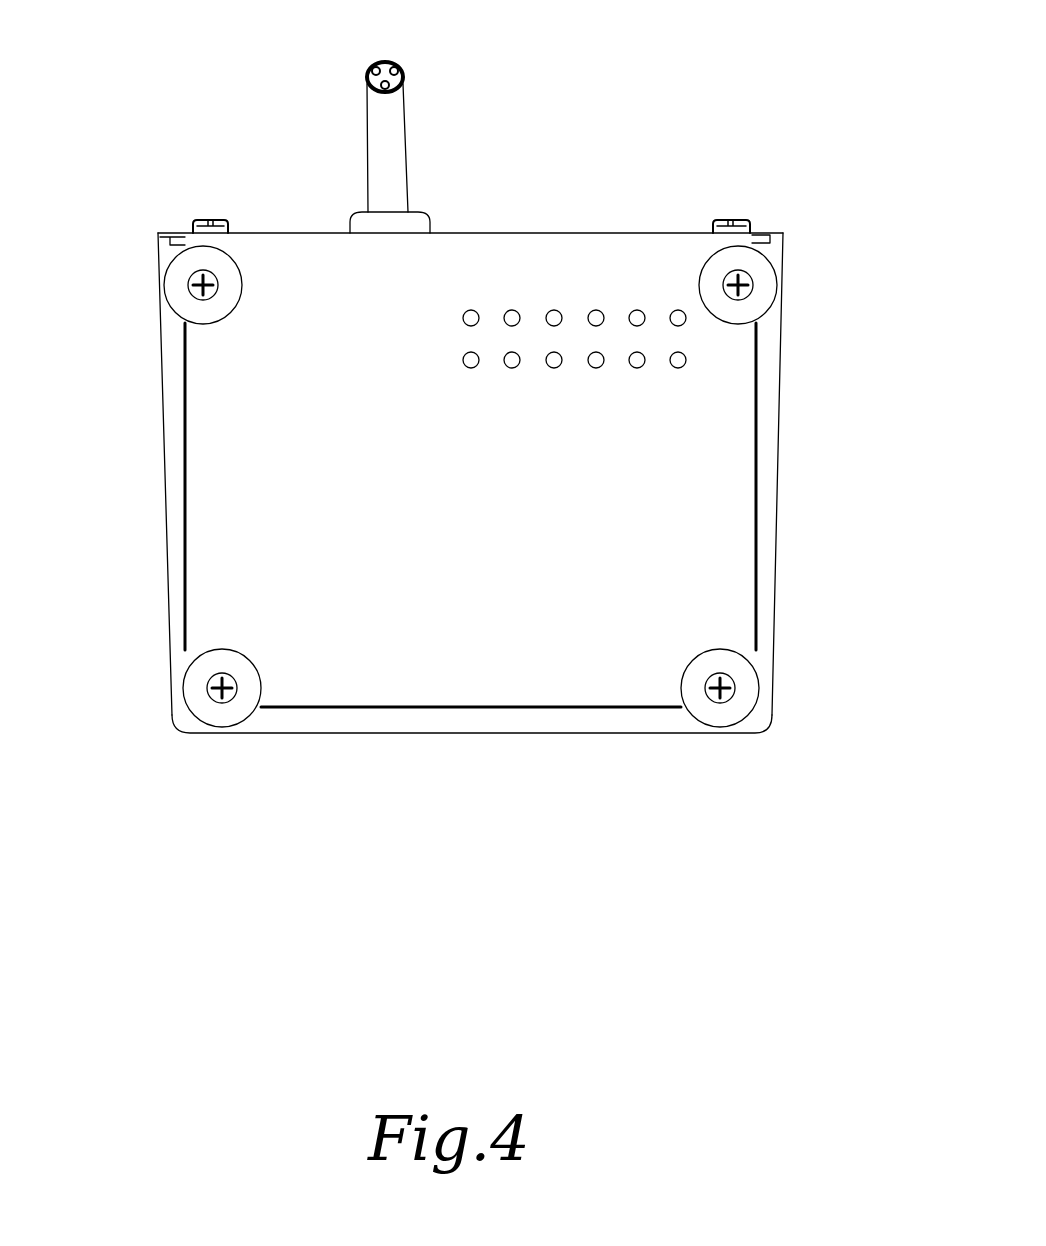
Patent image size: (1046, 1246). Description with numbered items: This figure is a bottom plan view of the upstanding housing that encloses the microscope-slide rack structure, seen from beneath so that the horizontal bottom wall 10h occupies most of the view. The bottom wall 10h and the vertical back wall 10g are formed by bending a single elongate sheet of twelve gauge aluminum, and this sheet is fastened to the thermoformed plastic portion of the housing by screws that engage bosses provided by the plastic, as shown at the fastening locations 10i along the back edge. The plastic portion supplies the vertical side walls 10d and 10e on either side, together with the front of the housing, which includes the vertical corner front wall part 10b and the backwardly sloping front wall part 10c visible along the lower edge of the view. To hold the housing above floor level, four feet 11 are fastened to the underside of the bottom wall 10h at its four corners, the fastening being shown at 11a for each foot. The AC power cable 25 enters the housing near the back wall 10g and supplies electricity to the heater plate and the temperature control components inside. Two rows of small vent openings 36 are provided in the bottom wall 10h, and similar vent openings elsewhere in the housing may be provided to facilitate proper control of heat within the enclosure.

The vertical corner front wall part 10b is at (343, 732).
The backwardly sloping front wall part 10c is at (575, 717).
The vertical side wall 10d is at (172, 468).
The vertical side wall 10e is at (777, 468).
The vertical back wall 10g is at (473, 233).
The horizontal bottom wall 10h is at (503, 536).
The screw fastening 10i is at (210, 222).
The feet 11 is at (183, 697).
The foot fastening 11a is at (203, 285).
The AC power cable 25 is at (388, 140).
The vent holes 36 is at (512, 310).